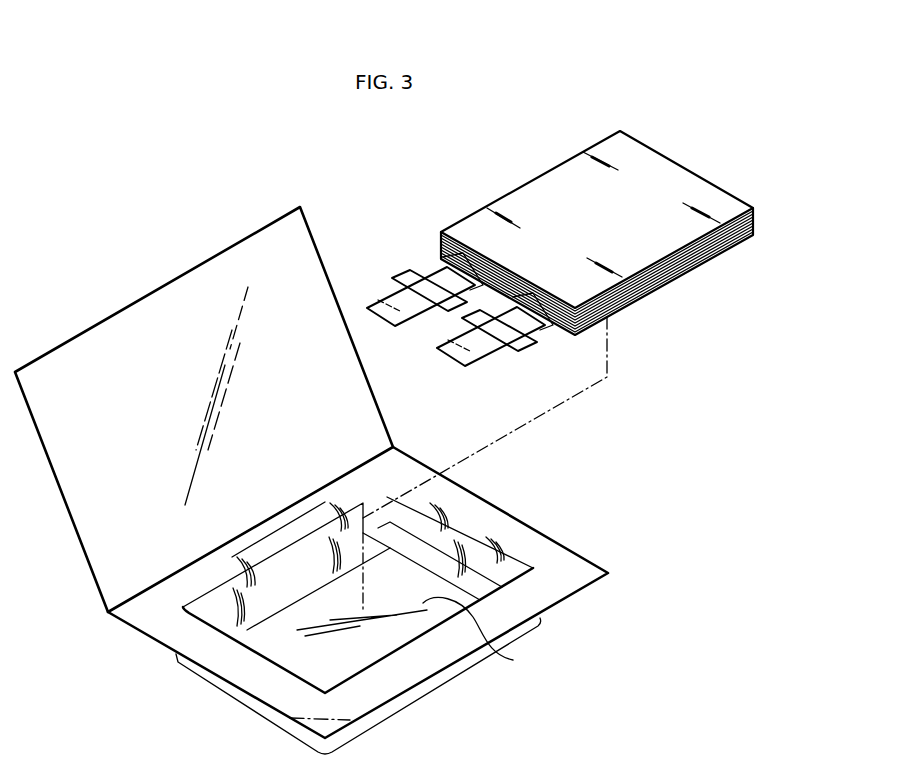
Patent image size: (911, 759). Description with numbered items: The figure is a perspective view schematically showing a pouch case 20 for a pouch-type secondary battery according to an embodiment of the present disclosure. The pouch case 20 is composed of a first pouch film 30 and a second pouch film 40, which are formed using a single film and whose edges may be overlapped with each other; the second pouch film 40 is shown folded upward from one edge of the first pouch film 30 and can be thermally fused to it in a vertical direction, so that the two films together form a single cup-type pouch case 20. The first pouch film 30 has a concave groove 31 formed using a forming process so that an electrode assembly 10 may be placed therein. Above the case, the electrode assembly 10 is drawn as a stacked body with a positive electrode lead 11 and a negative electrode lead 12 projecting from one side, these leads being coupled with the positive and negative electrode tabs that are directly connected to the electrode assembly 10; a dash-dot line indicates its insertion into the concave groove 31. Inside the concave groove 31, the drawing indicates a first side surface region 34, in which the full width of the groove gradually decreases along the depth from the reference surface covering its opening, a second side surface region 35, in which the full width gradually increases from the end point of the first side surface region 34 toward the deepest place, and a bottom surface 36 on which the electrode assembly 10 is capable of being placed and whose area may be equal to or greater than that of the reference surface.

The electrode assembly 10 is at (535, 190).
The positive electrode lead 11 is at (383, 307).
The negative electrode lead 12 is at (458, 350).
The pouch case 20 is at (84, 644).
The first pouch film 30 is at (562, 555).
The concave groove 31 is at (310, 660).
The first side surface region 34 is at (418, 517).
The second side surface region 35 is at (477, 587).
The bottom surface 36 is at (513, 660).
The second pouch film 40 is at (160, 318).